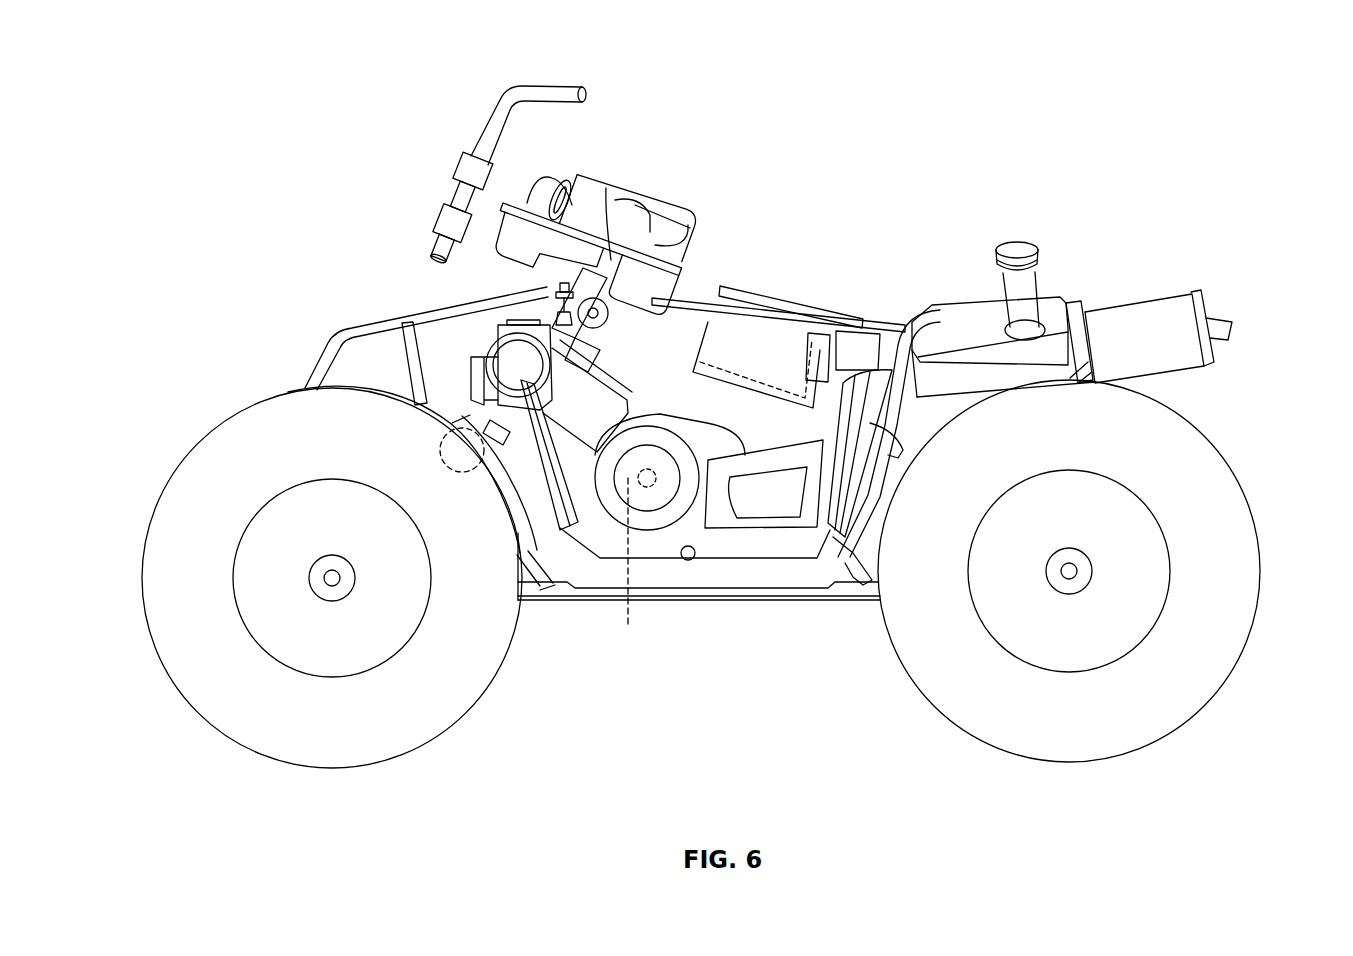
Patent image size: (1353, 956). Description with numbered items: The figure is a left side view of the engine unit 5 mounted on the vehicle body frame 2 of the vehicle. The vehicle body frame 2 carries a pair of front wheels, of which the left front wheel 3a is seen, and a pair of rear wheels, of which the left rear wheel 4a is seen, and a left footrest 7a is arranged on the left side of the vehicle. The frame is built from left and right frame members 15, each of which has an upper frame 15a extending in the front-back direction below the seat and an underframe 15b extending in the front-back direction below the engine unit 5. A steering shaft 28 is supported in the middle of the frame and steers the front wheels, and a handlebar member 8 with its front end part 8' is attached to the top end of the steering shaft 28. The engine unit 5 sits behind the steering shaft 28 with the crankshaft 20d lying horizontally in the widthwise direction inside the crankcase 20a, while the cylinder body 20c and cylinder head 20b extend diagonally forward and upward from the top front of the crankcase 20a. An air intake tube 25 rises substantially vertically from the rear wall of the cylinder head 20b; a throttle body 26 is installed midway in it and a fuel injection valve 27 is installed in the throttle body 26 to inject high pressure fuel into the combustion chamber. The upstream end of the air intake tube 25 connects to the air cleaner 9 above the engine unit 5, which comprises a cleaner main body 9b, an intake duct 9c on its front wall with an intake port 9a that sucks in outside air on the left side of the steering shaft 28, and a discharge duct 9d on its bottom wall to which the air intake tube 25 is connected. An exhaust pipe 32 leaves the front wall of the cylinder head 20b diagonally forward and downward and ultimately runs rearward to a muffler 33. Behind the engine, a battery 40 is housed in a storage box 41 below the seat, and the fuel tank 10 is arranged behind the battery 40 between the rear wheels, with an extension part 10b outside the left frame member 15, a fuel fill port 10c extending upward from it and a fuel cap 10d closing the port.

The vehicle body frame 2 is at (756, 612).
The left front wheel 3a is at (236, 398).
The left rear wheel 4a is at (1240, 474).
The engine unit 5 is at (465, 346).
The left footrest 7a is at (690, 560).
The handlebar member 8 is at (538, 86).
The front end part of the handlebar member 8' is at (454, 174).
The air cleaner 9 is at (680, 205).
The intake port 9a is at (556, 180).
The cleaner main body 9b is at (645, 188).
The intake duct 9c is at (545, 198).
The discharge duct 9d is at (615, 200).
The fuel tank 10 is at (953, 302).
The extension part 10b is at (1085, 300).
The fuel fill port 10c is at (1048, 292).
The fuel cap 10d is at (1015, 245).
The frame member 15 is at (320, 340).
The upper frame 15a is at (905, 318).
The underframe 15b is at (800, 602).
The crankcase 20a is at (686, 432).
The cylinder head 20b is at (640, 400).
The cylinder body 20c is at (541, 455).
The crankshaft 20d is at (626, 561).
The air intake tube 25 is at (600, 342).
The throttle body 26 is at (612, 317).
The fuel injection valve 27 is at (540, 295).
The steering shaft 28 is at (437, 250).
The exhaust pipe 32 is at (453, 413).
The muffler 33 is at (1142, 296).
The battery 40 is at (755, 290).
The storage box 41 is at (700, 338).